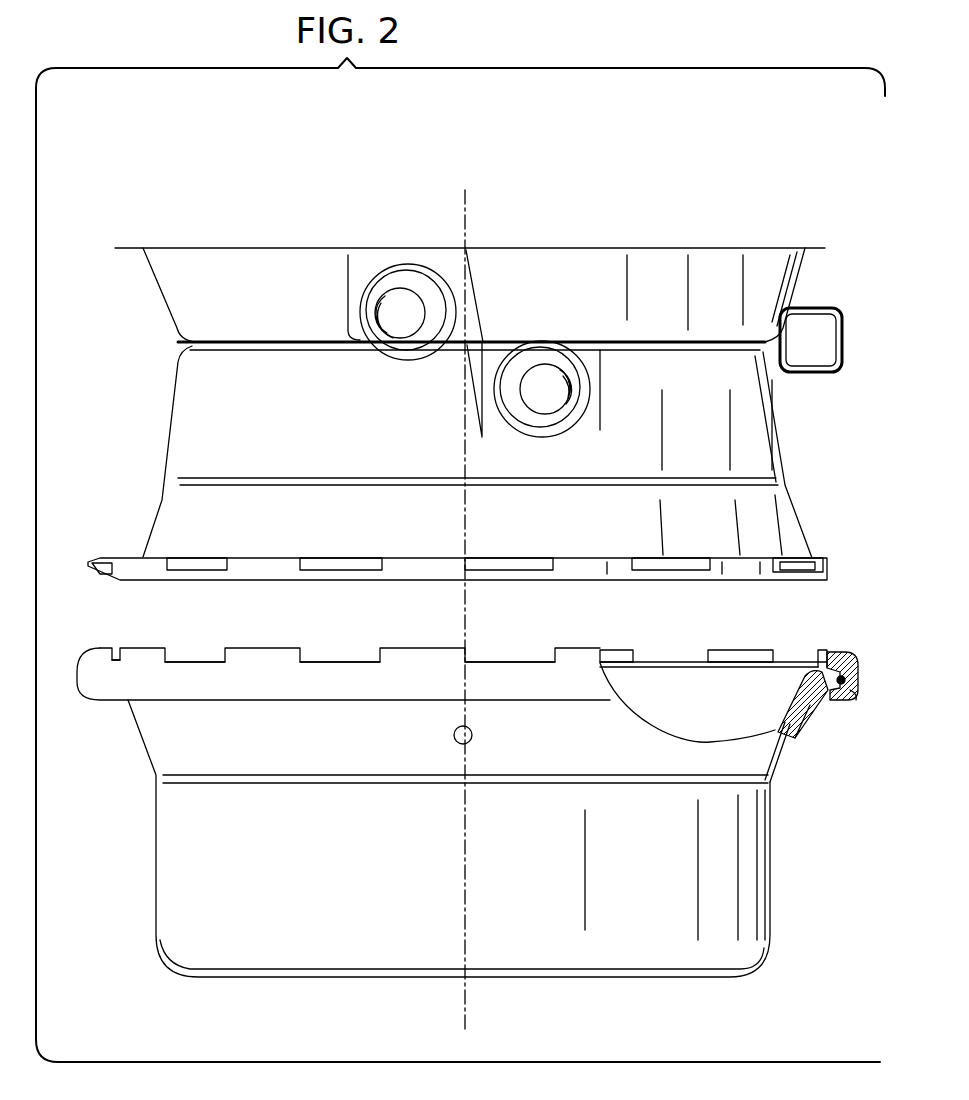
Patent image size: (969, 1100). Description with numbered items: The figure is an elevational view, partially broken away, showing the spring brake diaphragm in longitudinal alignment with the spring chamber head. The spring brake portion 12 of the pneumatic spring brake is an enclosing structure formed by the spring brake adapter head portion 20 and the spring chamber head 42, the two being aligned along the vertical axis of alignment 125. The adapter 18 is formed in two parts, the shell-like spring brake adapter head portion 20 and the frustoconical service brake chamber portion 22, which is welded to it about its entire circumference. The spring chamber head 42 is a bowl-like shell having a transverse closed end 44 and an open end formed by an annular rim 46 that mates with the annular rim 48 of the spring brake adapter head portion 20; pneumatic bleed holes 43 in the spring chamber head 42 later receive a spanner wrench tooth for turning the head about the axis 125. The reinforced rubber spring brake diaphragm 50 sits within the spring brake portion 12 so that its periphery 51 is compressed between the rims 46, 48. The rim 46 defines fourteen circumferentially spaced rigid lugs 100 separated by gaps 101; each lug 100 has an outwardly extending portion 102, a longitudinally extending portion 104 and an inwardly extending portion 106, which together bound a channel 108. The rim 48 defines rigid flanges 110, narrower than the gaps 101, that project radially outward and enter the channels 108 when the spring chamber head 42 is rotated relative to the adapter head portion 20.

The spring brake portion 12 is at (835, 452).
The adapter 18 is at (133, 346).
The spring brake adapter head portion 20 is at (215, 400).
The service brake chamber portion 22 is at (170, 272).
The spring chamber head 42 is at (170, 883).
The pneumatic bleed hole 43 is at (454, 735).
The transverse closed end 44 is at (522, 978).
The annular rim 46 is at (560, 703).
The annular rim 48 is at (737, 585).
The spring brake diaphragm 50 is at (785, 687).
The periphery 51 is at (810, 703).
The lug 100 is at (82, 652).
The gap 101 is at (116, 660).
The outwardly extending portion 102 is at (807, 727).
The longitudinally extending portion 104 is at (857, 697).
The inwardly extending portion 106 is at (837, 653).
The channel 108 is at (840, 676).
The flange 110 is at (105, 557).
The vertical axis of alignment 125 is at (460, 1003).